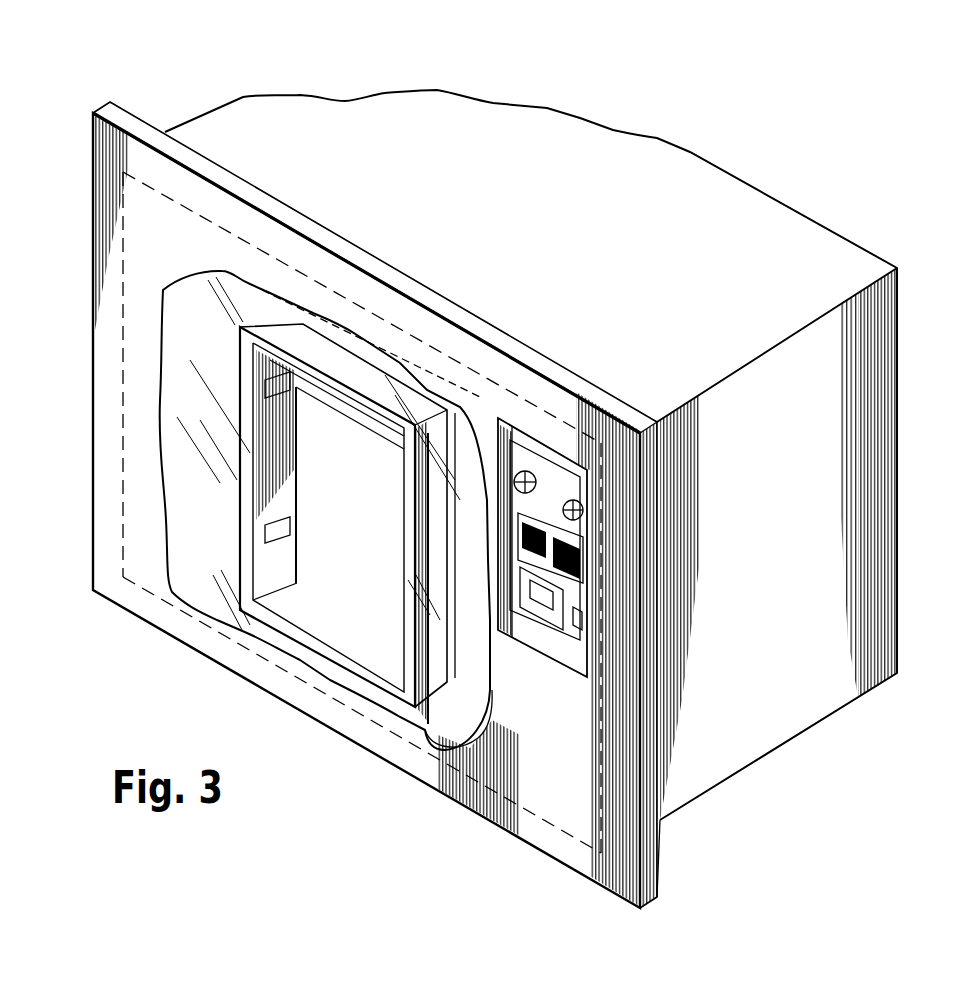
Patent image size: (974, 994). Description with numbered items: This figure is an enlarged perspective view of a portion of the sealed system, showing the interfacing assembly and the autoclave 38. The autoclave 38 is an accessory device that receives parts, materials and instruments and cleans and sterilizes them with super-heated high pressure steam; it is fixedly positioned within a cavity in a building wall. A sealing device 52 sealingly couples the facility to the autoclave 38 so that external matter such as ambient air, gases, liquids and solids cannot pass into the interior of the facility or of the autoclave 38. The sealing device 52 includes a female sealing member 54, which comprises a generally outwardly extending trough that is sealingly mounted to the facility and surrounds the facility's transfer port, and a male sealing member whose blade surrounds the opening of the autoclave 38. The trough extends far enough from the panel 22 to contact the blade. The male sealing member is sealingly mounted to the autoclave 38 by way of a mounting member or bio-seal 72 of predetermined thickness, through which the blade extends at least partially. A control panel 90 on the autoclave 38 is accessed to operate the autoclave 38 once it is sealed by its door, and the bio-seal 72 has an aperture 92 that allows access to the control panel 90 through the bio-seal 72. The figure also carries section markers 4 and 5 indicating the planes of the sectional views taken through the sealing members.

The panel 22 is at (213, 342).
The autoclave 38 is at (568, 238).
The sealing device 52 is at (300, 632).
The female sealing member 54 is at (422, 728).
The bio-seal 72 is at (548, 840).
The control panel 90 is at (580, 558).
The aperture 92 is at (660, 820).
The section line 4- 4 is at (467, 317).
The section line 5- 5 is at (237, 500).